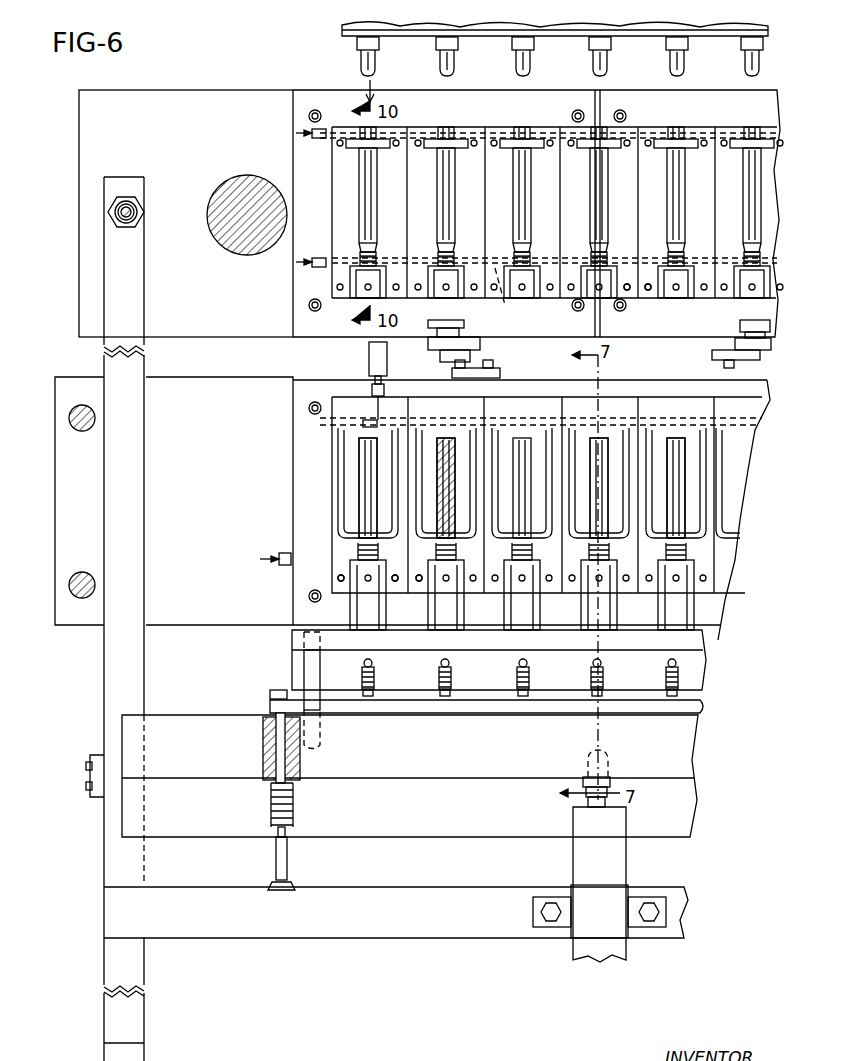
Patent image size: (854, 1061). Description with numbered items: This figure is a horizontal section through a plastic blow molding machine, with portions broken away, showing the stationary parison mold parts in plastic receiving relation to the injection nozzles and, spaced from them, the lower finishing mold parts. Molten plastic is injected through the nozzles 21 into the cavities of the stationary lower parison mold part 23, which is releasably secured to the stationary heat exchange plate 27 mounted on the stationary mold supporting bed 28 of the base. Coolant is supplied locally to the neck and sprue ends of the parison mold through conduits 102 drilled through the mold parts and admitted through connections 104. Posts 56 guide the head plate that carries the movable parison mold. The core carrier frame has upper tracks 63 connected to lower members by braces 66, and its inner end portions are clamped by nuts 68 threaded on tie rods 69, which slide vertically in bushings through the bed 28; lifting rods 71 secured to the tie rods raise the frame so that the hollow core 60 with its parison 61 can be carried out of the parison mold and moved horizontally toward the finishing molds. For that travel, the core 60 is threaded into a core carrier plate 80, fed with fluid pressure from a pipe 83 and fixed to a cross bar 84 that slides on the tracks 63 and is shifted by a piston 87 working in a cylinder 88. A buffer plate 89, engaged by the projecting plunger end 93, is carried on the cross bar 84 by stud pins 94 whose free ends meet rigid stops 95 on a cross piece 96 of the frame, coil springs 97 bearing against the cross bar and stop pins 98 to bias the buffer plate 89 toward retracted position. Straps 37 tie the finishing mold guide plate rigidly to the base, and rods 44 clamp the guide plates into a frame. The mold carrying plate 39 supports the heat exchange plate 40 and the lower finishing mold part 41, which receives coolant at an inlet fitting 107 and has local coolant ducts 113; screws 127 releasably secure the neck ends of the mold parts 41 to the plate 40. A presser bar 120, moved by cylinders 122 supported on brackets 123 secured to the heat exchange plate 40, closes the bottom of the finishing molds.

The injection nozzles 21 is at (378, 60).
The lower parison mold part 23 is at (342, 215).
The stationary heat exchange plate 27 is at (313, 97).
The stationary mold supporting bed 28 is at (215, 103).
The straps 37 is at (480, 345).
The mold carrying plate 39 is at (67, 507).
The heat exchange plate 40 is at (293, 385).
The lower finishing mold part 41 is at (333, 476).
The rods 44 is at (69, 418).
The posts 56 is at (224, 190).
The hollow core 60 is at (446, 440).
The parison 61 is at (363, 466).
The tracks 63 is at (108, 673).
The braces 66 is at (90, 778).
The nuts 68 is at (112, 207).
The tie rods 69 is at (117, 206).
The core frame lifting rods 71 is at (119, 216).
The core carrier plate 80 is at (697, 638).
The fluid pressure delivering pipe 83 is at (374, 683).
The cross bar 84 is at (176, 728).
The piston 87 is at (606, 808).
The cylinder 88 is at (578, 960).
The buffer plate 89 is at (270, 697).
The outer projecting end of plunger 93 is at (696, 715).
The stud pins 94 is at (286, 858).
The rigid stops 95 is at (269, 886).
The cross piece 96 is at (440, 937).
The coil springs 97 is at (292, 801).
The stop pin 98 is at (277, 830).
The coolant conduits 102 is at (516, 296).
The coolant connections 104 is at (318, 139).
The inlet fitting 107 is at (282, 550).
The local coolant ducts 113 is at (383, 420).
The presser bar 120 is at (617, 405).
The cylinders 122 is at (369, 352).
The brackets 123 is at (372, 380).
The screws 127 is at (647, 290).